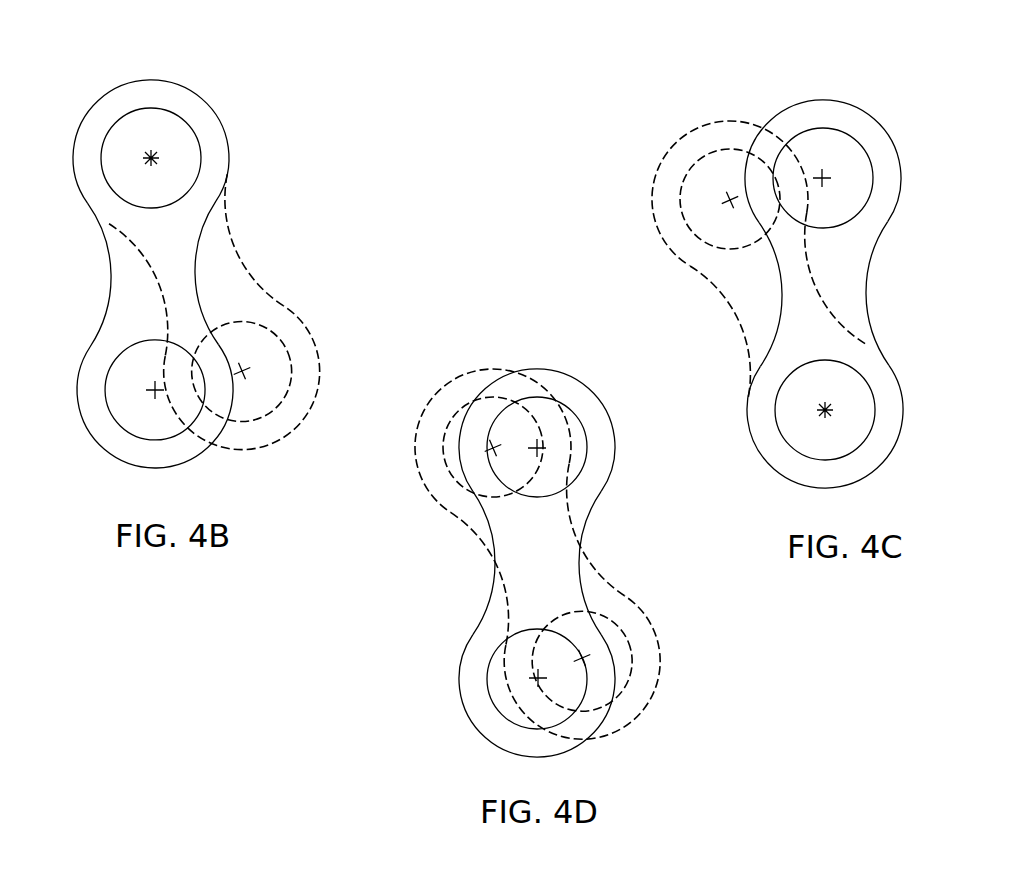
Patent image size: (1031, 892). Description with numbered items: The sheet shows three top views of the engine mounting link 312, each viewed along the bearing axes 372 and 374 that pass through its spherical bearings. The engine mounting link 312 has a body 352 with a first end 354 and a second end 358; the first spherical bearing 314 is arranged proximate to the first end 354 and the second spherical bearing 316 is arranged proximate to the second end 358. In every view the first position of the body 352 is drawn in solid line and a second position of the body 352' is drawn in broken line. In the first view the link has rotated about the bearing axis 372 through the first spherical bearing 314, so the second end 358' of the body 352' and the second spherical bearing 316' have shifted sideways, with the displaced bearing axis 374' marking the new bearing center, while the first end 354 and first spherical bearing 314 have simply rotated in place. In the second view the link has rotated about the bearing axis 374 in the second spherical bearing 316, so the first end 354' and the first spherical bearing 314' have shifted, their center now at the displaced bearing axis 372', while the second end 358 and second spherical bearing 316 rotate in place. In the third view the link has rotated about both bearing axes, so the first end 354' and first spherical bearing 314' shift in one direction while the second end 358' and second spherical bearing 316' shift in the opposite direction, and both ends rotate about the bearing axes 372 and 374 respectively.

In FIG. 4B, the engine mounting link 312 is at (238, 116).
In FIG. 4C, the engine mounting link 312 is at (912, 249).
In FIG. 4D, the engine mounting link 312 is at (614, 535).
In FIG. 4B, the first spherical bearing 314 is at (195, 158).
In FIG. 4C, the first spherical bearing 314 is at (870, 178).
In FIG. 4D, the first spherical bearing 314 is at (579, 444).
In FIG. 4C, the first spherical bearing (second position) 314' is at (694, 199).
In FIG. 4D, the first spherical bearing (second position) 314' is at (469, 463).
In FIG. 4B, the second spherical bearing 316 is at (129, 412).
In FIG. 4C, the second spherical bearing 316 is at (881, 410).
In FIG. 4D, the second spherical bearing 316 is at (561, 679).
In FIG. 4B, the second spherical bearing (second position) 316' is at (282, 371).
In FIG. 4D, the second spherical bearing (second position) 316' is at (582, 661).
In FIG. 4B, the body 352 is at (130, 274).
In FIG. 4C, the body 352 is at (802, 305).
In FIG. 4D, the body 352 is at (516, 563).
In FIG. 4B, the body (second position) 352' is at (215, 264).
In FIG. 4D, the body (second position) 352' is at (570, 554).
In FIG. 4B, the first end 354 is at (151, 117).
In FIG. 4C, the first end 354 is at (822, 134).
In FIG. 4D, the first end 354 is at (537, 402).
In FIG. 4C, the first end (second position) 354' is at (723, 168).
In FIG. 4D, the first end (second position) 354' is at (486, 426).
In FIG. 4B, the second end 358 is at (155, 422).
In FIG. 4C, the second end 358 is at (827, 440).
In FIG. 4D, the second end 358 is at (531, 705).
In FIG. 4B, the second end (second position) 358' is at (248, 398).
In FIG. 4D, the second end (second position) 358' is at (588, 681).
In FIG. 4B, the bearing axis 372 is at (154, 142).
In FIG. 4C, the bearing axis 372 is at (824, 161).
In FIG. 4D, the bearing axis 372 is at (542, 485).
In FIG. 4C, the bearing axis (second position) 372' is at (720, 185).
In FIG. 4D, the bearing axis (second position) 372' is at (511, 439).
In FIG. 4B, the bearing axis 374 is at (144, 375).
In FIG. 4C, the bearing axis 374 is at (824, 394).
In FIG. 4D, the bearing axis 374 is at (557, 681).
In FIG. 4B, the bearing axis (second position) 374' is at (250, 359).
In FIG. 4D, the bearing axis (second position) 374' is at (566, 623).